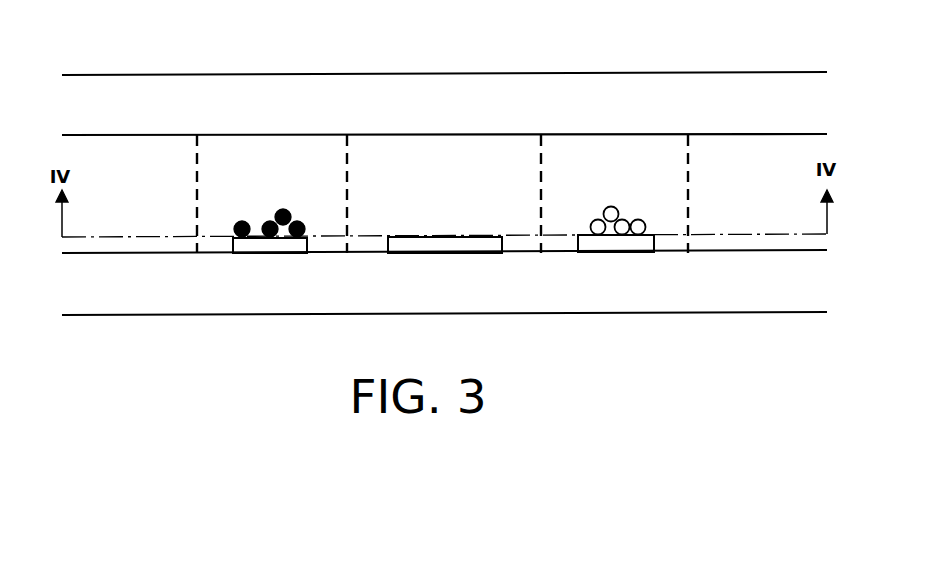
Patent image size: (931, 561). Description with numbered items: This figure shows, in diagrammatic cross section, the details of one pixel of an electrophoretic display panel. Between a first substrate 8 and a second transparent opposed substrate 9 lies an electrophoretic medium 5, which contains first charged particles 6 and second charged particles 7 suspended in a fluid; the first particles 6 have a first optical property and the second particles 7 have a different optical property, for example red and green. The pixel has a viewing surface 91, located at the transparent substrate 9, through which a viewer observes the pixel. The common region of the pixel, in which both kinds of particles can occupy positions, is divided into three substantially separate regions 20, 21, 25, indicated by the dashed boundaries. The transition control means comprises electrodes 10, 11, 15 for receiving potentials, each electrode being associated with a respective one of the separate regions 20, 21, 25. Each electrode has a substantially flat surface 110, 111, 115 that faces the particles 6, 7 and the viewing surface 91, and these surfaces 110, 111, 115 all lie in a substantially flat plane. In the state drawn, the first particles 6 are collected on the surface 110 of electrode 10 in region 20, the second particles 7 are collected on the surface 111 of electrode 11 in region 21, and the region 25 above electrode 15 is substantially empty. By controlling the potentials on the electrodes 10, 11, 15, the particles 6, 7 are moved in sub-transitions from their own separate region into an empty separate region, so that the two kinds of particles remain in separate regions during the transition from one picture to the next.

The electrophoretic medium 5 is at (98, 150).
The second transparent opposed substrate 9 is at (112, 84).
The viewing surface 91 is at (636, 69).
The first substrate 8 is at (112, 303).
The substantially separate region 20 is at (266, 153).
The substantially separate region 25 is at (441, 153).
The substantially separate region 21 is at (613, 153).
The electrode 10 is at (272, 255).
The substantially flat surface 110 is at (258, 234).
The first charged particles 6 is at (285, 210).
The electrode 15 is at (470, 244).
The substantially flat surface 115 is at (404, 235).
The electrode 11 is at (611, 254).
The substantially flat surface 111 is at (586, 232).
The second charged particles 7 is at (640, 218).